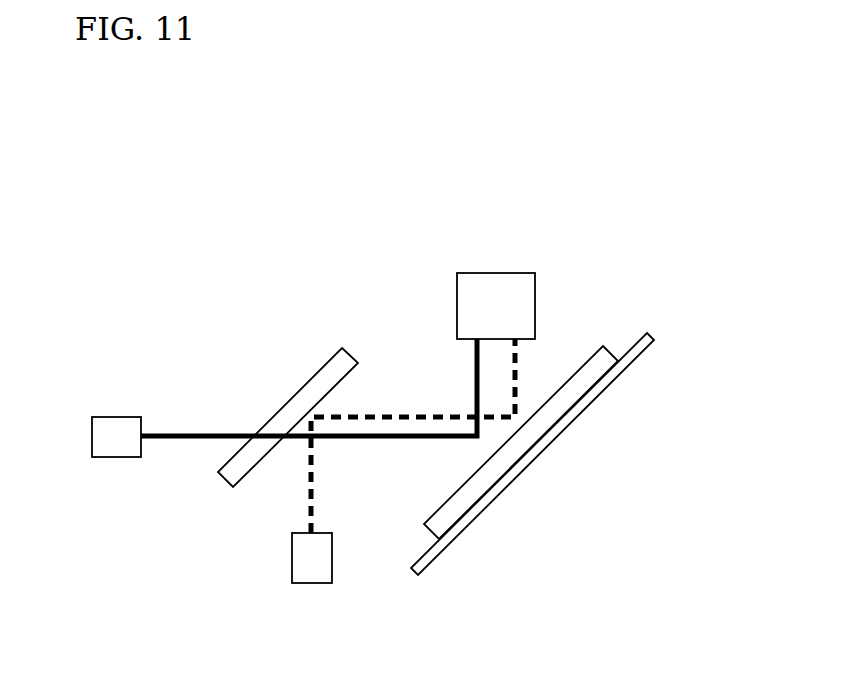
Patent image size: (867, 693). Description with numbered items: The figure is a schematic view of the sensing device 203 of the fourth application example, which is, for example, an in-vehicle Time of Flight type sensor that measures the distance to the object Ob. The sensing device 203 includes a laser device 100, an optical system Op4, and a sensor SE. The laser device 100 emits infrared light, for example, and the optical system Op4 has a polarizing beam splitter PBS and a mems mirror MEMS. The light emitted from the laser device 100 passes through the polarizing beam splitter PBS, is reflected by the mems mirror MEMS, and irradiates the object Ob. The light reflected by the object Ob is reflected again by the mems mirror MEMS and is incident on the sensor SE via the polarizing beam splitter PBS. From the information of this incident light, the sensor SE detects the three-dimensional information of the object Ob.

The sensing device 203 is at (640, 153).
The laser device 100 is at (110, 474).
The polarizing beam splitter PBS is at (287, 398).
The object Ob is at (497, 273).
The sensor SE is at (309, 573).
The optical system Op4 is at (628, 311).
The mems mirror MEMS is at (512, 455).